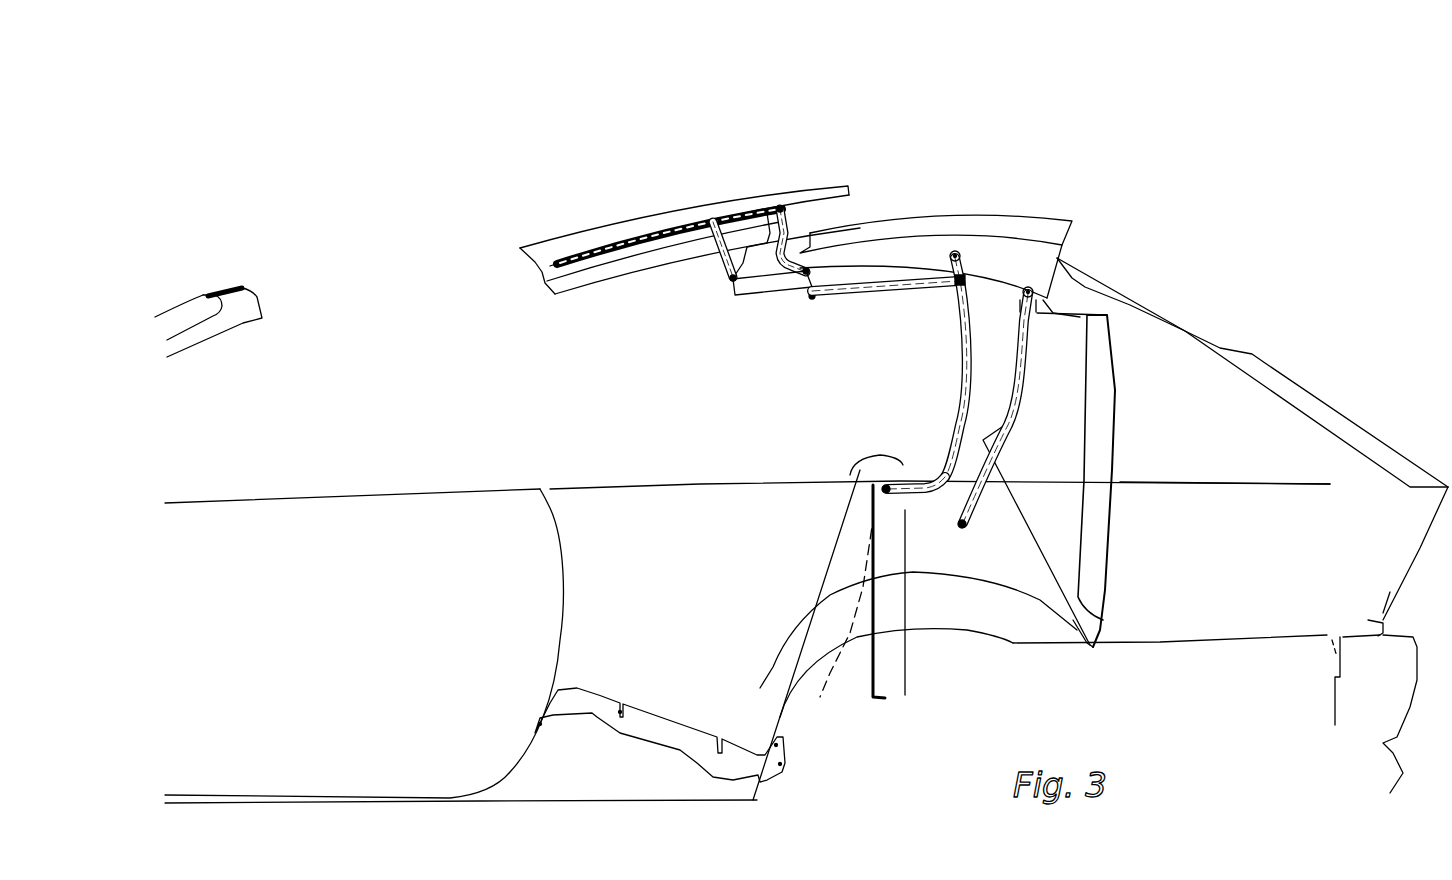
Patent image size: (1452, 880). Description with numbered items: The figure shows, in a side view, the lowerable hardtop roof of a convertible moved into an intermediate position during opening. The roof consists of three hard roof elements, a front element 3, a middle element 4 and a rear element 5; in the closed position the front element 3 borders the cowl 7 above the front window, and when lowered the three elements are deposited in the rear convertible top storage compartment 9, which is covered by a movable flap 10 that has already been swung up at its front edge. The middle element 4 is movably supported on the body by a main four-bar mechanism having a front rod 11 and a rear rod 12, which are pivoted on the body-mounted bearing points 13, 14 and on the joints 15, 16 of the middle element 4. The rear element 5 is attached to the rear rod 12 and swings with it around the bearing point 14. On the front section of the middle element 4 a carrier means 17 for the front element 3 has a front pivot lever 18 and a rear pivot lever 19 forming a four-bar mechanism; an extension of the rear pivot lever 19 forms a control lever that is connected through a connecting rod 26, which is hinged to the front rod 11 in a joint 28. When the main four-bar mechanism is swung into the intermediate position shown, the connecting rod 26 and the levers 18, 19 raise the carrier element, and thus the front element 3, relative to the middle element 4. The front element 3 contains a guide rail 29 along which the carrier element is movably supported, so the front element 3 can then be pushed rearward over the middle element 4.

The front element 3 is at (673, 216).
The middle element 4 is at (997, 223).
The rear element 5 is at (1104, 370).
The cowl 7 is at (232, 302).
The convertible top storage compartment 9 is at (1133, 535).
The flap 10 is at (1267, 378).
The front rod 11 is at (962, 357).
The rear rod 12 is at (1030, 330).
The body-mounted bearing point 13 is at (880, 489).
The body-mounted bearing point 14 is at (965, 526).
The joint 15 is at (952, 252).
The joint 16 is at (1028, 290).
The carrier means 17 is at (723, 292).
The front pivot lever 18 is at (722, 263).
The rear pivot lever 19 is at (783, 238).
The connecting rod 26 is at (866, 295).
The joint 28 is at (962, 272).
The guide rail 29 is at (591, 242).